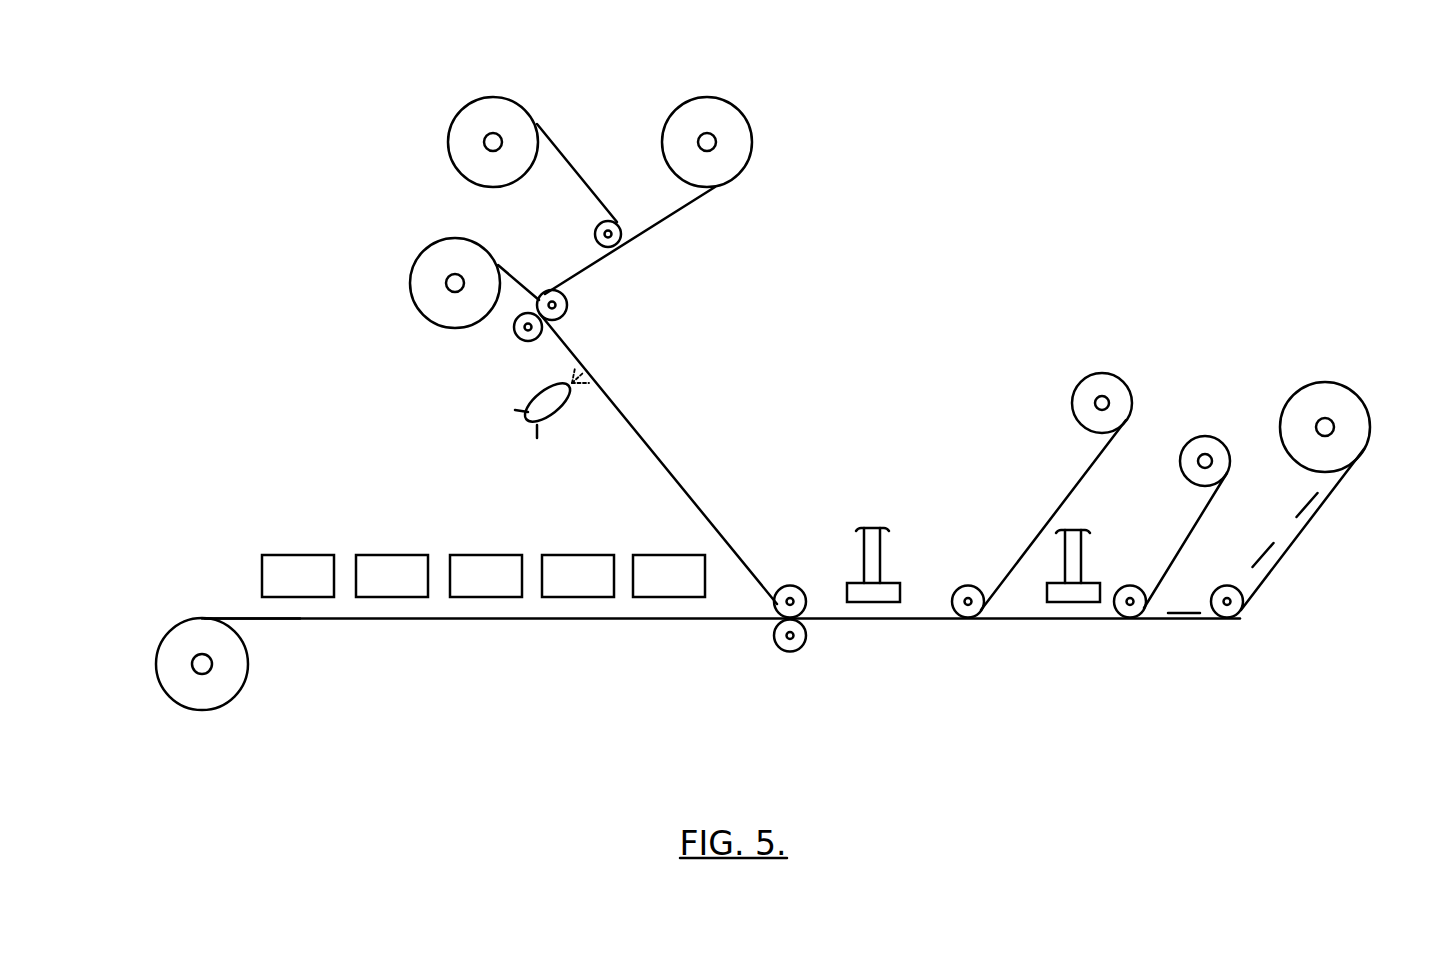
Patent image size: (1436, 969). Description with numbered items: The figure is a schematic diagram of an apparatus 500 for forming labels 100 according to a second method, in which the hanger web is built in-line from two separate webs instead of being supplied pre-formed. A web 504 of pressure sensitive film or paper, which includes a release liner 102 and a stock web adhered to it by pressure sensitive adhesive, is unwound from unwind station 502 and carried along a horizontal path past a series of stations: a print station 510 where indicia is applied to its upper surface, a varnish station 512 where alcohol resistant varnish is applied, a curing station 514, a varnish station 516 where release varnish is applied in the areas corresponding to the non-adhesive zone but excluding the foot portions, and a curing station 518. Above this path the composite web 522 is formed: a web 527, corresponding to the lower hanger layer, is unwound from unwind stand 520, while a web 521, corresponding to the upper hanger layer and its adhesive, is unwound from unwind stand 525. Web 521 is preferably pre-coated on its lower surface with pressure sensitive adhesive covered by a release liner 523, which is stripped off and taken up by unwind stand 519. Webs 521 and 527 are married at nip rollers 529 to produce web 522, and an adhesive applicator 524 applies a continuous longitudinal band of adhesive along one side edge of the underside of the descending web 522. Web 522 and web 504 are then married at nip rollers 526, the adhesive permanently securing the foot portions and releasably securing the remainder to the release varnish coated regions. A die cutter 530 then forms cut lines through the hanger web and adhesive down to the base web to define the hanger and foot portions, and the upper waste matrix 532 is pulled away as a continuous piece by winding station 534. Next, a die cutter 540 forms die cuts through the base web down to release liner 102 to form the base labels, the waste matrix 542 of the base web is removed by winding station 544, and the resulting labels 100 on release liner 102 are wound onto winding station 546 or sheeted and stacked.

The labels 100 is at (1187, 594).
The release liner 102 is at (390, 621).
The apparatus 500 is at (905, 396).
The unwind station 502 is at (227, 677).
The web 504 is at (241, 618).
The print station 510 is at (277, 591).
The varnish station 512 is at (371, 591).
The curing station 514 is at (465, 591).
The varnish station 516 is at (557, 591).
The curing station 518 is at (648, 591).
The unwind stand 519 is at (478, 107).
The unwind stand 520 is at (430, 295).
The web 521 is at (667, 220).
The web 522 is at (620, 412).
The release liner 523 is at (567, 156).
The adhesive applicator 524 is at (557, 421).
The unwind stand 525 is at (730, 123).
The nip rollers 526 is at (793, 646).
The web 527 is at (520, 293).
The nip rollers 529 is at (525, 342).
The die cutter 530 is at (872, 556).
The upper waste matrix 532 is at (1065, 498).
The winding station 534 is at (1117, 402).
The die cutter 540 is at (1068, 561).
The waste matrix 542 is at (1207, 513).
The winding station 544 is at (1217, 457).
The winding station 546 is at (1330, 422).